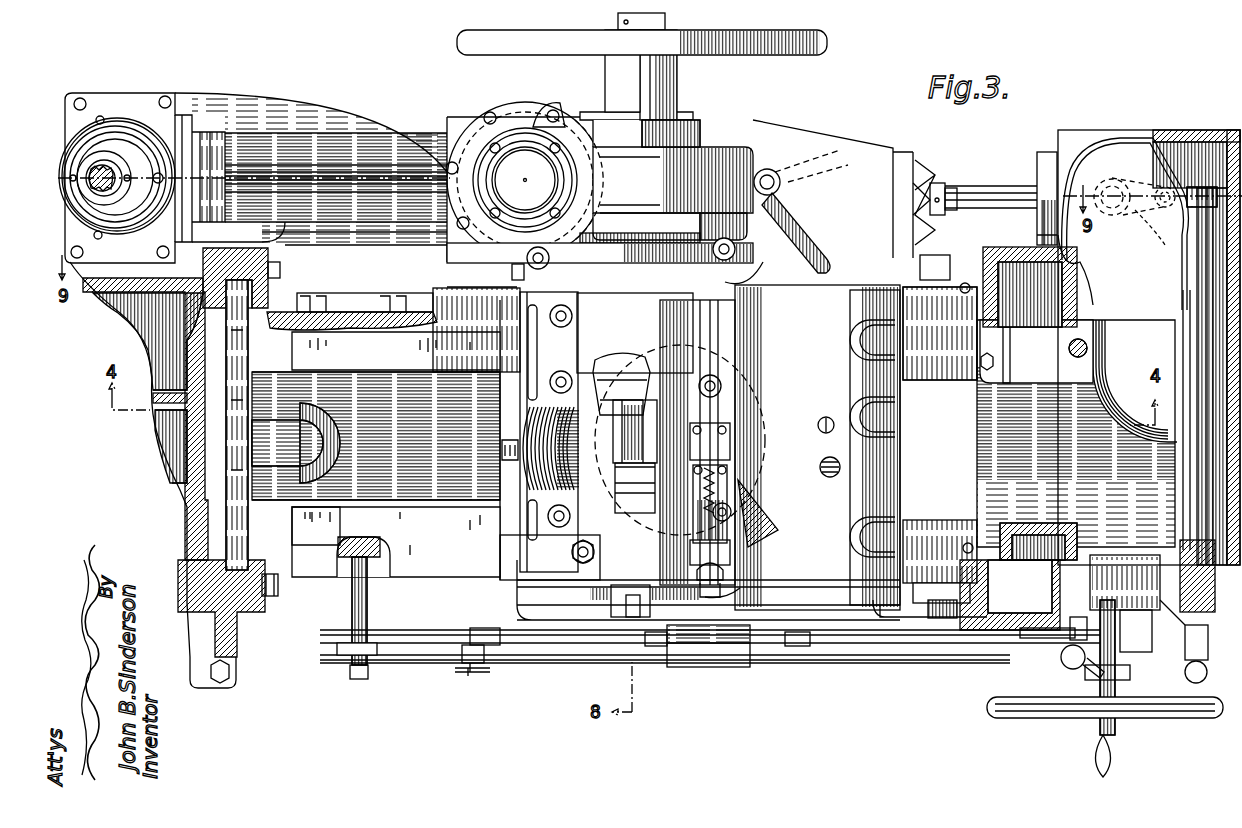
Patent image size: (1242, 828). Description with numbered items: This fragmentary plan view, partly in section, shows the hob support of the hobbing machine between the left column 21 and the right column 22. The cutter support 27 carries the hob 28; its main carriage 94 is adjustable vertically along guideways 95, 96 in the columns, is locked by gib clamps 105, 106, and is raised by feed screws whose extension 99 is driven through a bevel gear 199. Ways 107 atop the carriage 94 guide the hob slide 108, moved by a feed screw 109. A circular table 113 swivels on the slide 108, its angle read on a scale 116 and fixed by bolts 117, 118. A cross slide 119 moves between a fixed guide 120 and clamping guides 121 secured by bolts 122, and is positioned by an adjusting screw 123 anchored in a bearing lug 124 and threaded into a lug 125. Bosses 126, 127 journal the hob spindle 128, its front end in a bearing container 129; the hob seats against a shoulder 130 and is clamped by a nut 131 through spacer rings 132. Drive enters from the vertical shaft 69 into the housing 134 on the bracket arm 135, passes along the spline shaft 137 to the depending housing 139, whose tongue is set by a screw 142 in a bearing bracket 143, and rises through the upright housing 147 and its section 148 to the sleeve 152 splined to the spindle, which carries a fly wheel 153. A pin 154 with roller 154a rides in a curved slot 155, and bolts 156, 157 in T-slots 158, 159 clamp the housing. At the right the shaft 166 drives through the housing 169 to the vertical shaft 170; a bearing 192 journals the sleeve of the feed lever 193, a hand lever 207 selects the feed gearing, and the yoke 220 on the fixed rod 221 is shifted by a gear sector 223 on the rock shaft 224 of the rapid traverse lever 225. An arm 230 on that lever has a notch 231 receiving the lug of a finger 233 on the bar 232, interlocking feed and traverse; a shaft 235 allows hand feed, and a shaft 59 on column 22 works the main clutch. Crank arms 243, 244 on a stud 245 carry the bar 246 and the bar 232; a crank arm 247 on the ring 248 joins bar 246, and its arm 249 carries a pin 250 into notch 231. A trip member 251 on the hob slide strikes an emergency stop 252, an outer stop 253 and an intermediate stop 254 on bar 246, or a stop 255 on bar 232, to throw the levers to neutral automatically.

The column 21 is at (240, 620).
The column 22 is at (980, 652).
The cutter support 27 is at (471, 556).
The hob 28 is at (598, 550).
The shaft 59 is at (1088, 346).
The vertical shaft 69 is at (104, 166).
The main carriage 94 is at (445, 495).
The guideway 95 is at (250, 545).
The guideway 96 is at (965, 283).
The shaft extension 99 is at (318, 470).
The gib clamp 105 is at (280, 268).
The gib clamp 106 is at (935, 268).
The ways 107 is at (430, 293).
The hob slide 108 is at (865, 628).
The feed screw 109 is at (897, 440).
The table 113 is at (752, 425).
The scale 116 is at (770, 535).
The bolts 117 is at (550, 385).
The bolts 118 is at (722, 386).
The cross slide 119 is at (700, 380).
The fixed guide 120 is at (765, 335).
The clamping guides 121 is at (555, 348).
The bolts 122 is at (572, 316).
The adjusting screw 123 is at (700, 498).
The bearing lug 124 is at (722, 565).
The lug 125 is at (730, 452).
The front boss 126 is at (612, 600).
The rear boss 127 is at (590, 328).
The spindle 128 is at (645, 435).
The bearing container 129 is at (730, 588).
The shoulder 130 is at (640, 380).
The nut 131 is at (633, 610).
The spacer rings 132 is at (635, 488).
The housing 134 is at (145, 112).
The bracket arm 135 is at (312, 102).
The spline shaft 137 is at (390, 165).
The depending housing 139 is at (462, 137).
The adjusting screw 142 is at (950, 188).
The bearing bracket 143 is at (930, 185).
The upright housing 147 is at (560, 108).
The housing section 148 is at (712, 160).
The sleeve 152 is at (677, 110).
The fly wheel 153 is at (800, 57).
The pin 154 is at (772, 170).
The roller 154a is at (826, 155).
The curved slot 155 is at (812, 225).
The clamping bolt 156 is at (526, 255).
The clamping bolt 157 is at (736, 249).
The T-slot 158 is at (515, 276).
The T-slot 159 is at (765, 262).
The shaft 166 is at (1005, 186).
The housing 169 is at (1045, 152).
The vertical shaft 170 is at (1130, 178).
The bearing 192 is at (1125, 560).
The hand lever 193 is at (1061, 660).
The bevel gear 199 is at (300, 475).
The hand lever 207 is at (1102, 550).
The yoke 220 is at (1148, 210).
The fixed rod 221 is at (1145, 231).
The gear sector 223 is at (1192, 208).
The rock shaft 224 is at (1200, 297).
The hand lever 225 is at (1203, 685).
The lateral arm 230 is at (1160, 672).
The notch 231 is at (1138, 652).
The bar 232 is at (920, 663).
The finger 233 is at (1118, 700).
The shaft 235 is at (987, 708).
The crank arm 243 is at (322, 634).
The crank arm 244 is at (344, 660).
The stud 245 is at (358, 680).
The bar 246 is at (888, 645).
The crank arm 247 is at (1075, 610).
The ring 248 is at (1085, 598).
The arm 249 is at (1205, 635).
The pin 250 is at (1213, 672).
The trip member 251 is at (735, 667).
The emergency stop 252 is at (500, 645).
The outer stop 253 is at (797, 632).
The intermediate stop 254 is at (662, 647).
The adjustable stop 255 is at (462, 675).